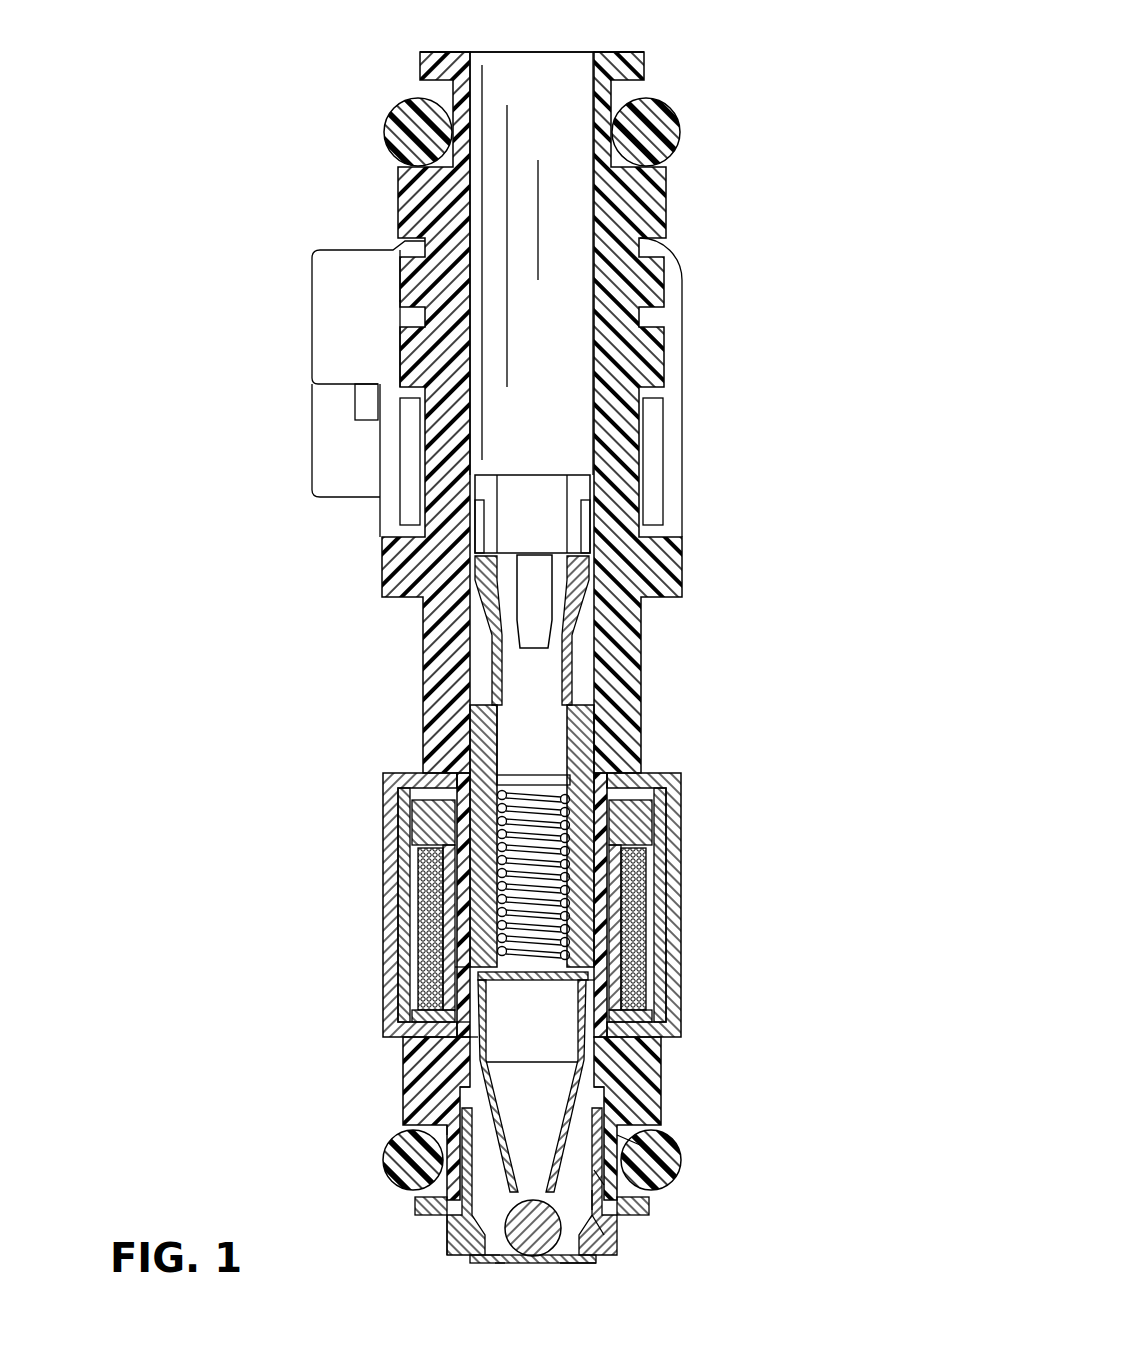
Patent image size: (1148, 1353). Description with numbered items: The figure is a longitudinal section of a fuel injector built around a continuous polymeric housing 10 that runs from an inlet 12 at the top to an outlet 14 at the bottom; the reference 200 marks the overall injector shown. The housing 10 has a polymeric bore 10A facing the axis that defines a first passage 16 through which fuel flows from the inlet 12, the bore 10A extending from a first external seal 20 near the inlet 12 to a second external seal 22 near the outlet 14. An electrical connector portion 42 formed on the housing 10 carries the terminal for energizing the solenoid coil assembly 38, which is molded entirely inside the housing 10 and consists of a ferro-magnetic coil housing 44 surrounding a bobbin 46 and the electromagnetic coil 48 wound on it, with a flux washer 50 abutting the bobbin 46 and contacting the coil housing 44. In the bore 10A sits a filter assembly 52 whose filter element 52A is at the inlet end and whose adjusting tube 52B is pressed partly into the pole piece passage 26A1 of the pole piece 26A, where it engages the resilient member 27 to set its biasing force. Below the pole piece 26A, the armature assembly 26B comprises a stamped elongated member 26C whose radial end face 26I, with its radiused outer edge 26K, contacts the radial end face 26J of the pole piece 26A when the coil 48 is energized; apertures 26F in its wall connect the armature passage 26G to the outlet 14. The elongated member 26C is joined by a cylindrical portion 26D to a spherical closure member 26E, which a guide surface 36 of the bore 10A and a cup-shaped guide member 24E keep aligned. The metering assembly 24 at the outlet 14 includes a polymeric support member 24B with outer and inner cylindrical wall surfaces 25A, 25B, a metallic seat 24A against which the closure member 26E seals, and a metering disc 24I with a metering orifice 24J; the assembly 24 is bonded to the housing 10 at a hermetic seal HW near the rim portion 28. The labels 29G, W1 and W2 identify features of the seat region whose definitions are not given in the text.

The inlet 12 is at (562, 30).
The first external seal 20 is at (658, 120).
The fuel injector assembly 200 is at (845, 151).
The polymeric housing 10 is at (653, 223).
The polymeric bore 10A is at (594, 352).
The first passage 16 is at (552, 405).
The electrical connector portion 42 is at (347, 333).
The filter assembly 52 is at (575, 508).
The filter element 52A is at (557, 576).
The pole piece 26A is at (587, 690).
The pole piece passage 26A1 is at (500, 775).
The adjusting tube 52B is at (563, 780).
The flux washer 50 is at (656, 792).
The resilient member 27 is at (495, 853).
The coil housing 44 is at (663, 832).
The solenoid coil assembly 38 is at (673, 880).
The bobbin 46 is at (423, 833).
The electromagnetic coil 48 is at (430, 933).
The guide surface 36 is at (653, 970).
The radial end face of pole piece 26J is at (593, 930).
The outer edge 26K is at (455, 972).
The radial end face of elongated member 26I is at (470, 1015).
The armature assembly 26B is at (593, 1036).
The elongated member 26C is at (597, 1015).
The armature passage 26G is at (587, 1072).
The valve body groove 29G is at (477, 1050).
The cylindrical portion 26D is at (468, 1105).
The aperture 26F is at (580, 1118).
The closure member 26E is at (452, 1185).
The second external seal 22 is at (403, 1140).
The rim portion 28 is at (605, 1250).
The metering assembly 24 is at (452, 1255).
The cup-shaped guide member 24E is at (445, 1198).
The polymeric support member 24B is at (448, 1242).
The metering disc 24I is at (500, 1262).
The outlet 14 is at (493, 1278).
The metering orifice 24J is at (560, 1262).
The seat 24A is at (577, 1265).
The disc width W2 is at (590, 1268).
The hermetic seal HW is at (600, 1228).
The outer cylindrical wall surface 25A is at (575, 1200).
The width W1 is at (600, 1178).
The inner cylindrical wall surface 25B is at (640, 1143).